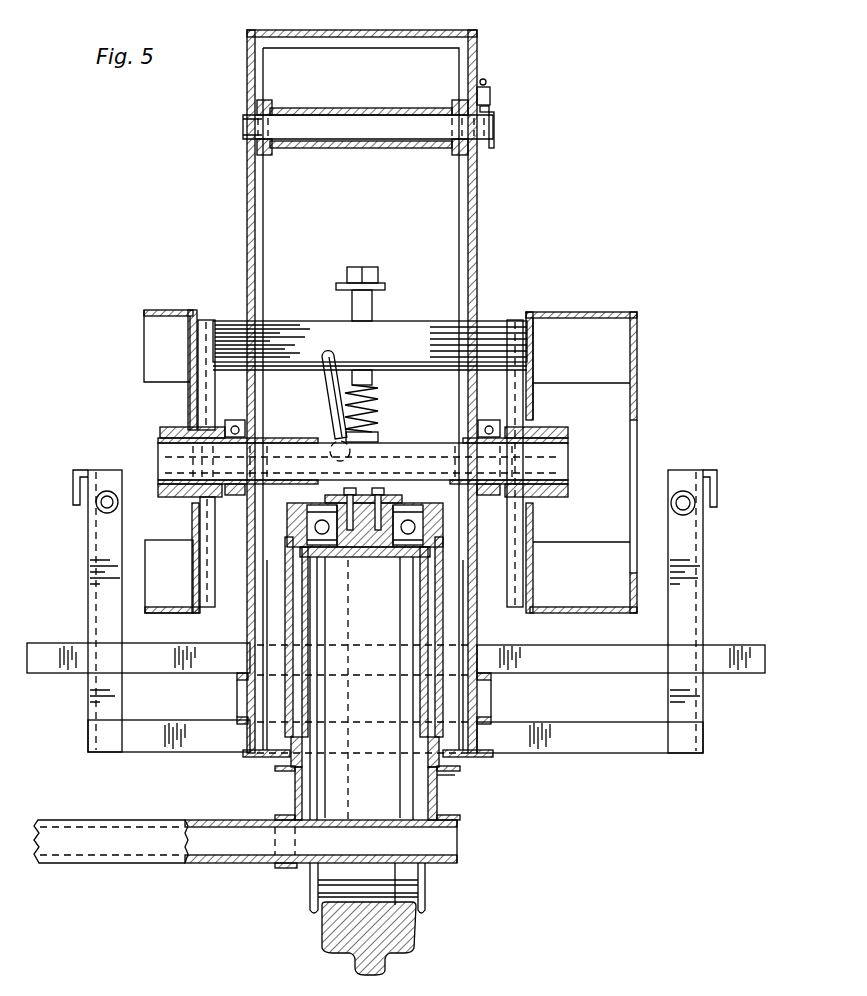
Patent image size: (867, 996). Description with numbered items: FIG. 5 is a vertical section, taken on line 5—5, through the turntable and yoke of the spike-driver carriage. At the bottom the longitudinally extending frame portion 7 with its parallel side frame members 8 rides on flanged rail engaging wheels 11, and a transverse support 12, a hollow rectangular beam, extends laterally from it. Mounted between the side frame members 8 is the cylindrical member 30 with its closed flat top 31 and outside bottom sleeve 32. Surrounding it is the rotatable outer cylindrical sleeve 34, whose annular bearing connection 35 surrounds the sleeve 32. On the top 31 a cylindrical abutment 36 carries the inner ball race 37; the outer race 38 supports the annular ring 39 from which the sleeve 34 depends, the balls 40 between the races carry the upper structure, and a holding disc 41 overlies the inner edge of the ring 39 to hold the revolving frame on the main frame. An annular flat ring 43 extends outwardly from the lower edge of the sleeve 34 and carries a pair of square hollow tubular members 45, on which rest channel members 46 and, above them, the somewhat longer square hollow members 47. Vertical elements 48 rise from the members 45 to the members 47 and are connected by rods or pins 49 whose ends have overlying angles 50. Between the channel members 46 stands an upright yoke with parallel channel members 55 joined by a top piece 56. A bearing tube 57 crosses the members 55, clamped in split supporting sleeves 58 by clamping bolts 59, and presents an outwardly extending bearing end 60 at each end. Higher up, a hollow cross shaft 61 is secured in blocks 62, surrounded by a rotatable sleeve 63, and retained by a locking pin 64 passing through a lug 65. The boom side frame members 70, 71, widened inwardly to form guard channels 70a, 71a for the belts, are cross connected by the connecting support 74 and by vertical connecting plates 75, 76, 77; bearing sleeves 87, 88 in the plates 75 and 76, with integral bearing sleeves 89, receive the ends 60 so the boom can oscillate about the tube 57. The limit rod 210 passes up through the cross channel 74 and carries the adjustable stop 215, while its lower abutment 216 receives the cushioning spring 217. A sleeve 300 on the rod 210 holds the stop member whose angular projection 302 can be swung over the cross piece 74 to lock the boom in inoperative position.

The tool 5 is at (416, 944).
The frame portion 7 is at (286, 813).
The side frame members 8 is at (295, 792).
The flanged rail engaging wheels 11 is at (427, 890).
The transverse support 12 is at (146, 852).
The cylindrical member 30 is at (326, 792).
The closed flat top 31 is at (430, 553).
The outside bottom sleeve 32 is at (440, 784).
The outer cylindrical sleeve 34 is at (444, 634).
The annular bearing connection 35 is at (430, 762).
The cylindrical abutment 36 is at (365, 556).
The inner ball race 37 is at (400, 548).
The outer race 38 is at (432, 522).
The annular ring 39 is at (300, 521).
The balls 40 is at (416, 559).
The holding disc 41 is at (403, 500).
The annular flat ring 43 is at (246, 759).
The square hollow tubular members 45 is at (160, 746).
The channel members 46 is at (236, 702).
The square hollow members 47 is at (62, 662).
The vertical elements 48 is at (88, 575).
The rods or pins 49 is at (98, 512).
The overlying angles 50 is at (72, 482).
The channel members 55 is at (255, 226).
The top piece 56 is at (385, 30).
The bearing tube 57 is at (363, 448).
The split supporting sleeves 58 is at (480, 429).
The clamping bolts 59 is at (236, 419).
The bearing end 60 is at (160, 453).
The hollow cross shaft 61 is at (245, 127).
The blocks 62 is at (266, 155).
The rotatable sleeve 63 is at (340, 148).
The locking pin 64 is at (494, 114).
The lug 65 is at (491, 97).
The side frame member 70 is at (176, 309).
The guard channel 70a is at (600, 312).
The side frame member 71 is at (178, 614).
The guard channel 71a is at (580, 613).
The connecting support 74 is at (490, 330).
The vertical connecting plate 75 is at (188, 387).
The vertical connecting plate 76 is at (534, 376).
The vertical connecting plate 77 is at (638, 397).
The bearing sleeve 87 is at (170, 427).
The bearing sleeve 88 is at (566, 427).
The integral bearing sleeves 89 is at (165, 489).
The limit rod 210 is at (373, 308).
The adjustable stop 215 is at (368, 270).
The lower abutment 216 is at (378, 436).
The spring 217 is at (380, 402).
The sleeve 300 is at (351, 453).
The angular projection 302 is at (325, 402).